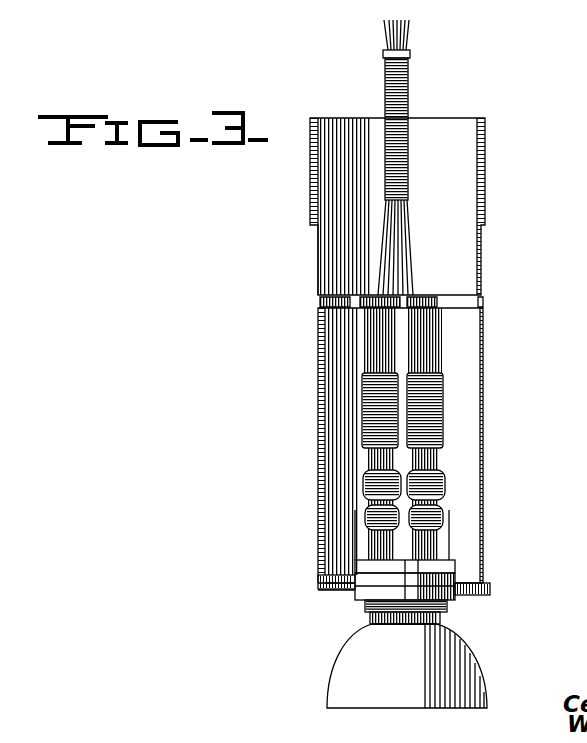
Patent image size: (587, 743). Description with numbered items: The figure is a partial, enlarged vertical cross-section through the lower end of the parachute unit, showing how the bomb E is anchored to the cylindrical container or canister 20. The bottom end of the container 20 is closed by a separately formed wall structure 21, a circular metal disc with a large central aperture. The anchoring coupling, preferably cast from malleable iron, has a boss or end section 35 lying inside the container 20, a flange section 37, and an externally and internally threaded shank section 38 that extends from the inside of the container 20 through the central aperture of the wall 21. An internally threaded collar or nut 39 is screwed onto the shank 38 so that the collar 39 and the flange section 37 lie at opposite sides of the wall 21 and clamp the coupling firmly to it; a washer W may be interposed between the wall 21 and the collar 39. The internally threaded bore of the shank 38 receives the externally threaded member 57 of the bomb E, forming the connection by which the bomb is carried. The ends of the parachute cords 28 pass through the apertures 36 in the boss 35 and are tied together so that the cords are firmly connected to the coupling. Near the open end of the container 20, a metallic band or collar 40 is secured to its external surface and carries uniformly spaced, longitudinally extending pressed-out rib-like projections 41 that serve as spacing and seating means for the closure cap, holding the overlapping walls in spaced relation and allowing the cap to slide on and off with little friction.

The cylindrical container or canister 20 is at (318, 366).
The wall structure 21 is at (470, 578).
The parachute cords 28 is at (445, 383).
The boss or end section 35 is at (447, 530).
The apertures 36 is at (458, 563).
The flange section 37 is at (322, 574).
The shank section 38 is at (365, 608).
The collar or nut 39 is at (455, 598).
The band or collar 40 is at (485, 152).
The rib-like elements or projections 41 is at (488, 180).
The externally threaded member 57 is at (352, 630).
The bomb E is at (346, 686).
The washer W is at (330, 603).